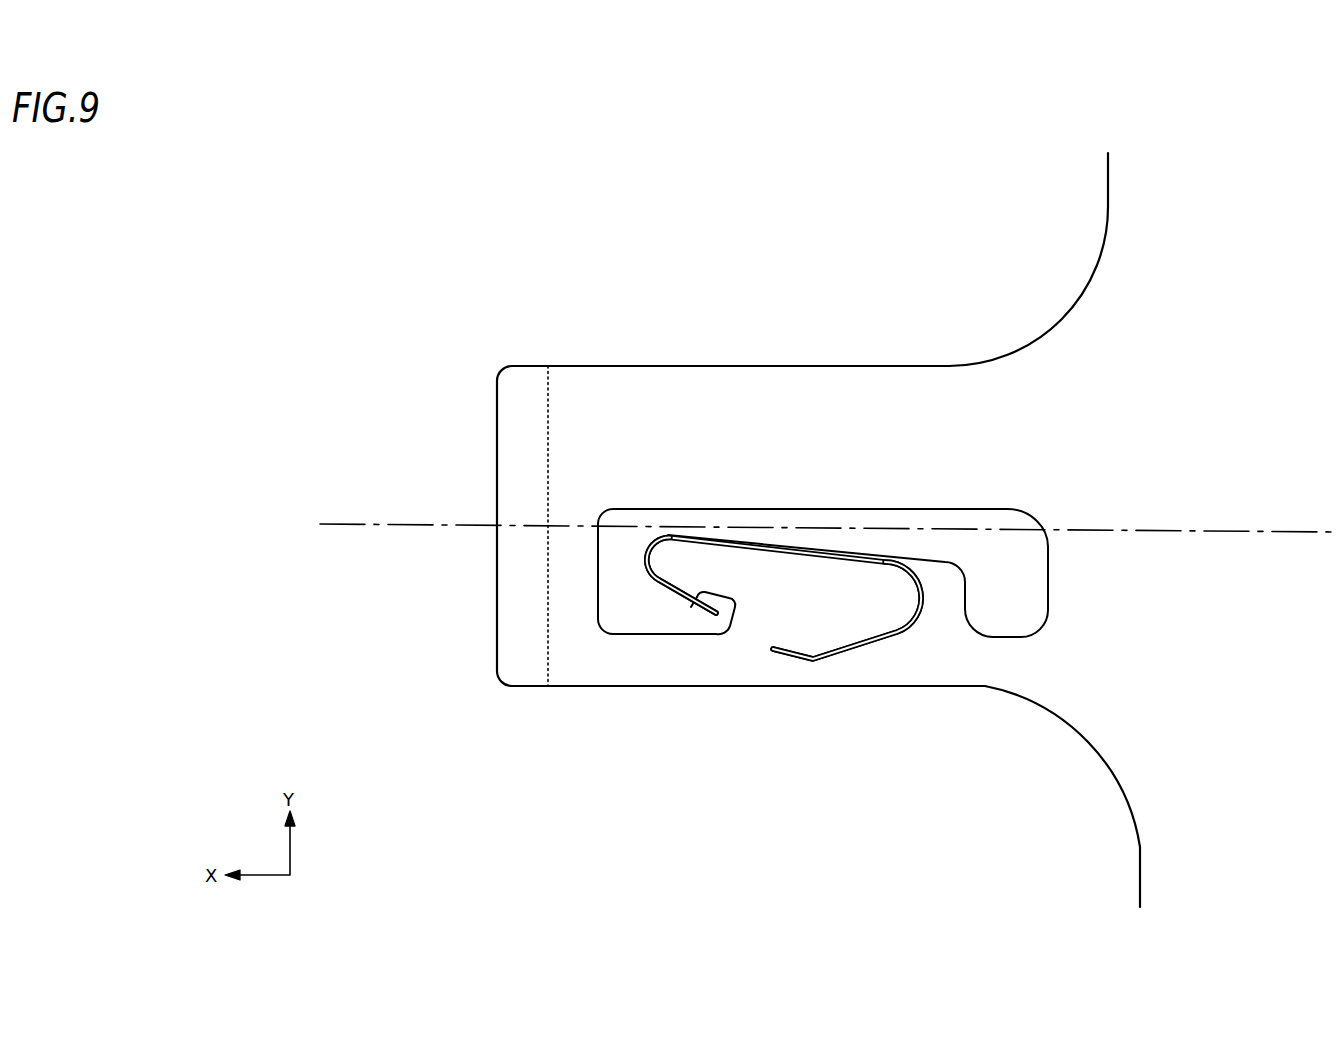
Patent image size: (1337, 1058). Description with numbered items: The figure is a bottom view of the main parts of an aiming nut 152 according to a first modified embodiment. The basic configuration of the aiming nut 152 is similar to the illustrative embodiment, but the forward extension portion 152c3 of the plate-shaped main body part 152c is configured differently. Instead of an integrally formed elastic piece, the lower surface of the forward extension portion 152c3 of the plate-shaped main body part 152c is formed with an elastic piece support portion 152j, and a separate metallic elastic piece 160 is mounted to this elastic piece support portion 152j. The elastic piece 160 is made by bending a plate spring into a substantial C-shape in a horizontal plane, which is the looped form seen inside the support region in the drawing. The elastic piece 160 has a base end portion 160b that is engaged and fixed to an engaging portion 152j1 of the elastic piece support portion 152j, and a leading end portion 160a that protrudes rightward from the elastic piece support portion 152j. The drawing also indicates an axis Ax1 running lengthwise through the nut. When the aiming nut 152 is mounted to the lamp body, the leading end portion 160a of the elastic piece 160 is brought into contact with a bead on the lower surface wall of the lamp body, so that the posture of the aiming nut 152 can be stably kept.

The aiming nut 152 is at (523, 298).
The forward extension portion 152c3 is at (726, 427).
The plate-shaped main body part 152c is at (1106, 432).
The elastic piece support portion 152j is at (617, 575).
The engaging portion 152j1 is at (726, 601).
The elastic piece 160 is at (898, 639).
The base end portion 160b is at (680, 605).
The leading end portion 160a is at (808, 662).
The axis Ax1 is at (1220, 531).